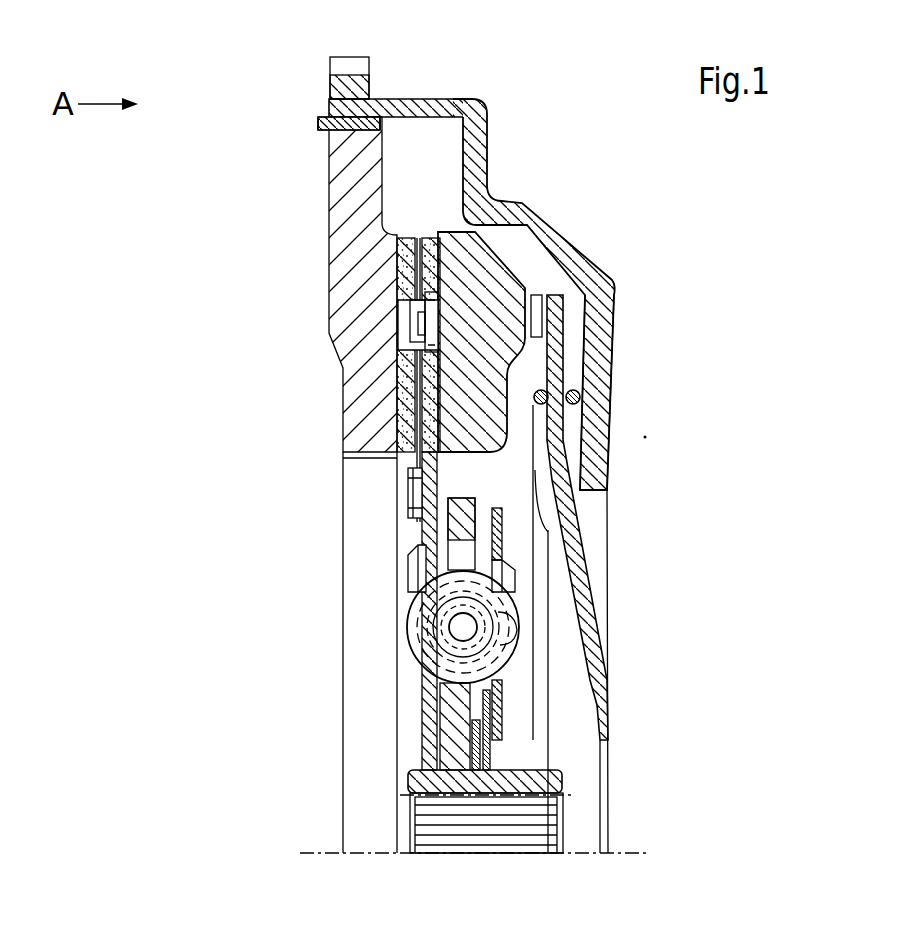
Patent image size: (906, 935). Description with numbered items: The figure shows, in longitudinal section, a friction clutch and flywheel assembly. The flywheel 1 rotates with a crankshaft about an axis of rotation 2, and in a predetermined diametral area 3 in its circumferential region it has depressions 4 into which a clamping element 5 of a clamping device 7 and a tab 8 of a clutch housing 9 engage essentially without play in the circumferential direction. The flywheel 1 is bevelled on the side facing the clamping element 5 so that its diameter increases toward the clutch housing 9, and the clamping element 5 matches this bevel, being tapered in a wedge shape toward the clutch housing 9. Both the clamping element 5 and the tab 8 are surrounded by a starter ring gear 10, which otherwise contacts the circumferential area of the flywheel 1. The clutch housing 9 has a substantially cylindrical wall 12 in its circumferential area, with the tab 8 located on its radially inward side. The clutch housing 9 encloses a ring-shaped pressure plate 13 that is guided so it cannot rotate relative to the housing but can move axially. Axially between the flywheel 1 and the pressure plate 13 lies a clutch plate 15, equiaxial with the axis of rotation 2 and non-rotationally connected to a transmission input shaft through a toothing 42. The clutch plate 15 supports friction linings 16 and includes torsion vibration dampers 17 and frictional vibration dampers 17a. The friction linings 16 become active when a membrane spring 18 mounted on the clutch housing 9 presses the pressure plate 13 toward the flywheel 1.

The flywheel 1 is at (345, 277).
The axis of rotation 2 is at (300, 853).
The diametral area 3 is at (329, 107).
The depressions 4 is at (381, 120).
The clamping element 5 is at (318, 132).
The clamping device 7 is at (308, 125).
The tab 8 is at (333, 99).
The clutch housing 9 is at (612, 275).
The starter ring gear 10 is at (342, 57).
The cylindrical wall 12 is at (455, 98).
The pressure plate 13 is at (500, 290).
The clutch plate 15 is at (406, 531).
The friction linings 16 is at (432, 238).
The torsion vibration dampers 17 is at (408, 638).
The frictional vibration dampers 17a is at (477, 780).
The membrane spring 18 is at (608, 578).
The toothing 42 is at (517, 797).